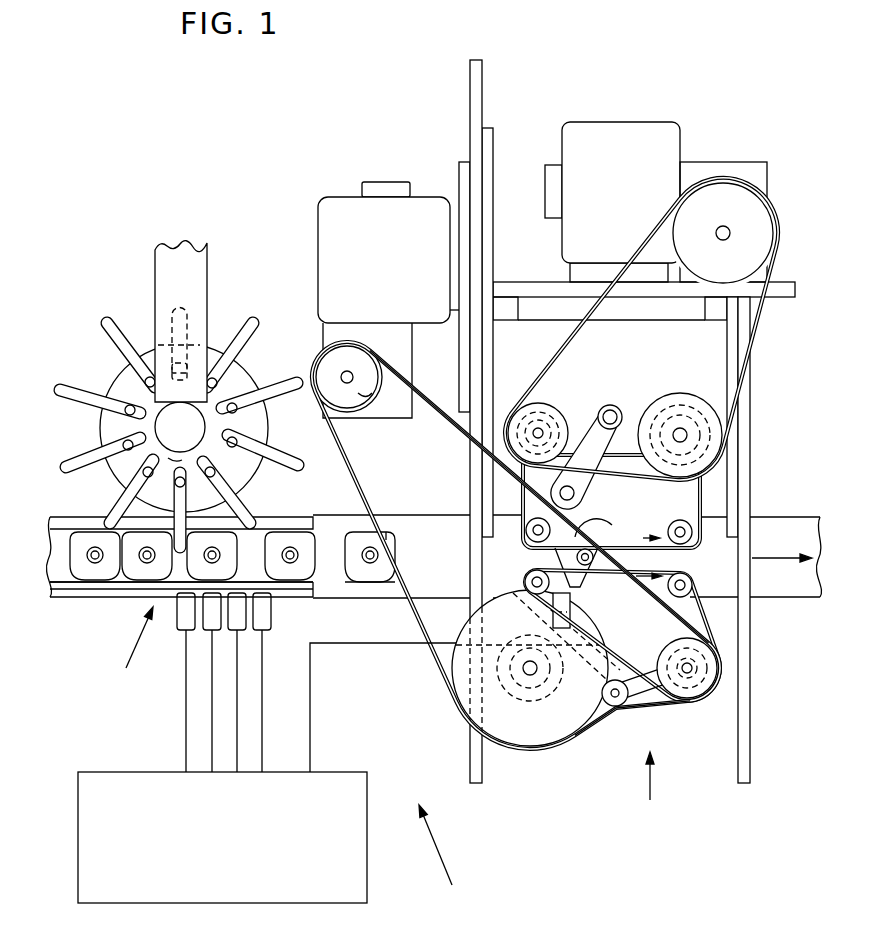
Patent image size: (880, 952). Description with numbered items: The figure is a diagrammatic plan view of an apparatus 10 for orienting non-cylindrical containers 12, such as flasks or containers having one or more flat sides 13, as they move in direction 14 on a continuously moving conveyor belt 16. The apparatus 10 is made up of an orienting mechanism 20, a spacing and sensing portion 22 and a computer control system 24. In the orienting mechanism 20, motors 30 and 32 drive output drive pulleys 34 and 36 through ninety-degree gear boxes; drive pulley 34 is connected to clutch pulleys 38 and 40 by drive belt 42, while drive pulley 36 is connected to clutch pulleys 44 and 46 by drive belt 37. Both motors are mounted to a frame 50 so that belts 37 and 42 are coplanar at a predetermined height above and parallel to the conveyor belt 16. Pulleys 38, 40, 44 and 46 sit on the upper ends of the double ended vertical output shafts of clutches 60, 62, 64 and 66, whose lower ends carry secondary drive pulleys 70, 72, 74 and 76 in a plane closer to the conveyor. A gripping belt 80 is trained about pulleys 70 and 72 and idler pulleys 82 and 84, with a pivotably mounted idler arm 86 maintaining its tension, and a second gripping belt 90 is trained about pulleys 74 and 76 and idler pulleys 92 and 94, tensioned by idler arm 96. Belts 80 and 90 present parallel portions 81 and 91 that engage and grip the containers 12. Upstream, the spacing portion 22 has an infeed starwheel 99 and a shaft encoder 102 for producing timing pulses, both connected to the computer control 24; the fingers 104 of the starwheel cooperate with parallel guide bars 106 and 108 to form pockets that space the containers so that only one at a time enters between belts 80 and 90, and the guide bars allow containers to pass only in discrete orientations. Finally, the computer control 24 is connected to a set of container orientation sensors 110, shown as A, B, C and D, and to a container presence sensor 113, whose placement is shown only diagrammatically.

The apparatus 10 is at (452, 851).
The containers 12 is at (585, 578).
The flat sides 13 is at (386, 537).
The direction 14 is at (775, 558).
The conveyor belt 16 is at (383, 587).
The orienting mechanism 20 is at (634, 804).
The spacing and sensing portion 22 is at (124, 655).
The computer control system 24 is at (267, 773).
The motor 30 is at (388, 300).
The motor 32 is at (612, 202).
The drive pulley 34 is at (372, 405).
The drive pulley 36 is at (722, 192).
The drive belt 37 is at (743, 183).
The clutch pulley 38 is at (537, 677).
The clutch pulley 40 is at (697, 647).
The drive belt 42 is at (570, 747).
The clutch pulley 44 is at (547, 420).
The clutch pulley 46 is at (683, 397).
The frame 50 is at (478, 76).
The clutch 60 is at (455, 740).
The clutch 62 is at (673, 697).
The clutch 64 is at (587, 432).
The clutch 66 is at (712, 439).
The secondary drive pulley 70 is at (533, 733).
The secondary drive pulley 72 is at (700, 668).
The secondary drive pulley 74 is at (542, 374).
The secondary drive pulley 76 is at (705, 440).
The gripping belt 80 is at (702, 618).
The parallel portion 81 is at (690, 573).
The idler pulley 82 is at (535, 570).
The idler pulley 84 is at (650, 673).
The idler arm 86 is at (613, 707).
The gripping belt 90 is at (697, 493).
The parallel portion 91 is at (625, 550).
The idler pulley 92 is at (540, 525).
The idler pulley 94 is at (690, 528).
The idler arm 96 is at (587, 480).
The infeed starwheel 99 is at (150, 357).
The shaft encoder 102 is at (180, 431).
The fingers 104 is at (108, 350).
The guide bar 106 is at (93, 487).
The guide bar 108 is at (108, 570).
The container orientation sensors 110 is at (258, 632).
The container presence sensor 113 is at (575, 628).